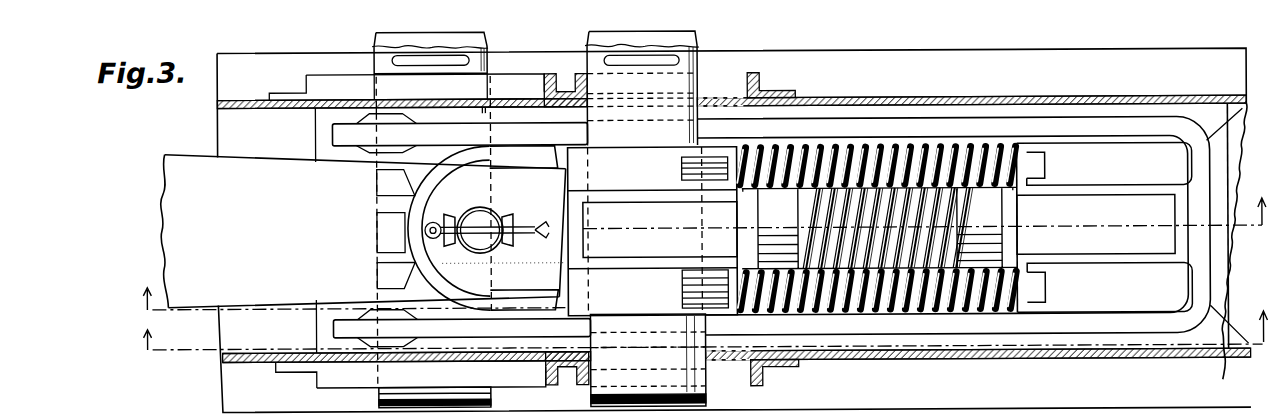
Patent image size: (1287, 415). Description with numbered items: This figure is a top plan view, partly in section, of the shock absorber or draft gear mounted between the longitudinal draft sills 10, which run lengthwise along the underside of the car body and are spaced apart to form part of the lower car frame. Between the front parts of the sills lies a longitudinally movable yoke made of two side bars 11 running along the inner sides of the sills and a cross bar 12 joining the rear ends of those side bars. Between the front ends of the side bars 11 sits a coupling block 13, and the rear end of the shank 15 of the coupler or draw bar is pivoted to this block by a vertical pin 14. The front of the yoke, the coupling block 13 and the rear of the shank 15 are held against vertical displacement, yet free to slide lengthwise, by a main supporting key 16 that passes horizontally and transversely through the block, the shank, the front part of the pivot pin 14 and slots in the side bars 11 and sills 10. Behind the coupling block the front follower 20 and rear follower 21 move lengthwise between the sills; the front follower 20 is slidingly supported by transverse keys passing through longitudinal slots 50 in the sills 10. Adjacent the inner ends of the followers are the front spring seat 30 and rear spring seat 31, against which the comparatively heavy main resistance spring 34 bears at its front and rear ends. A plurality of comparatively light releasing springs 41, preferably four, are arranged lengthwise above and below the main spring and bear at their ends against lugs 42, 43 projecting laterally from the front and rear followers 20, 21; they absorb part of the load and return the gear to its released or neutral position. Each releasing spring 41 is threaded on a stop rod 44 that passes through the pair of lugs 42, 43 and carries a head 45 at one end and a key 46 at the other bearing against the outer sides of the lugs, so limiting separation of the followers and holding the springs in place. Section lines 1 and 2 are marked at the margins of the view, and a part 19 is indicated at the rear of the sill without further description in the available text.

The section line 1- 1 is at (696, 261).
The section line 2- 2 is at (695, 340).
The longitudinal draft sills 10 is at (1012, 94).
The yoke side bars 11 is at (953, 225).
The cross bar 12 is at (1208, 225).
The coupling block 13 is at (461, 230).
The vertical pin 14 is at (470, 214).
The shank 15 is at (363, 230).
The main supporting key 16 is at (376, 57).
The lug 19 is at (1226, 225).
The front follower 20 is at (653, 231).
The rear follower 21 is at (1105, 227).
The front spring seat 30 is at (809, 228).
The rear spring seat 31 is at (951, 227).
The main resistance spring 34 is at (922, 313).
The releasing springs 41 is at (856, 146).
The lug 42 is at (741, 172).
The lug 43 is at (1030, 287).
The stop rods 44 is at (927, 146).
The head 45 is at (1045, 167).
The key 46 is at (728, 180).
The longitudinal slots 50 is at (692, 218).